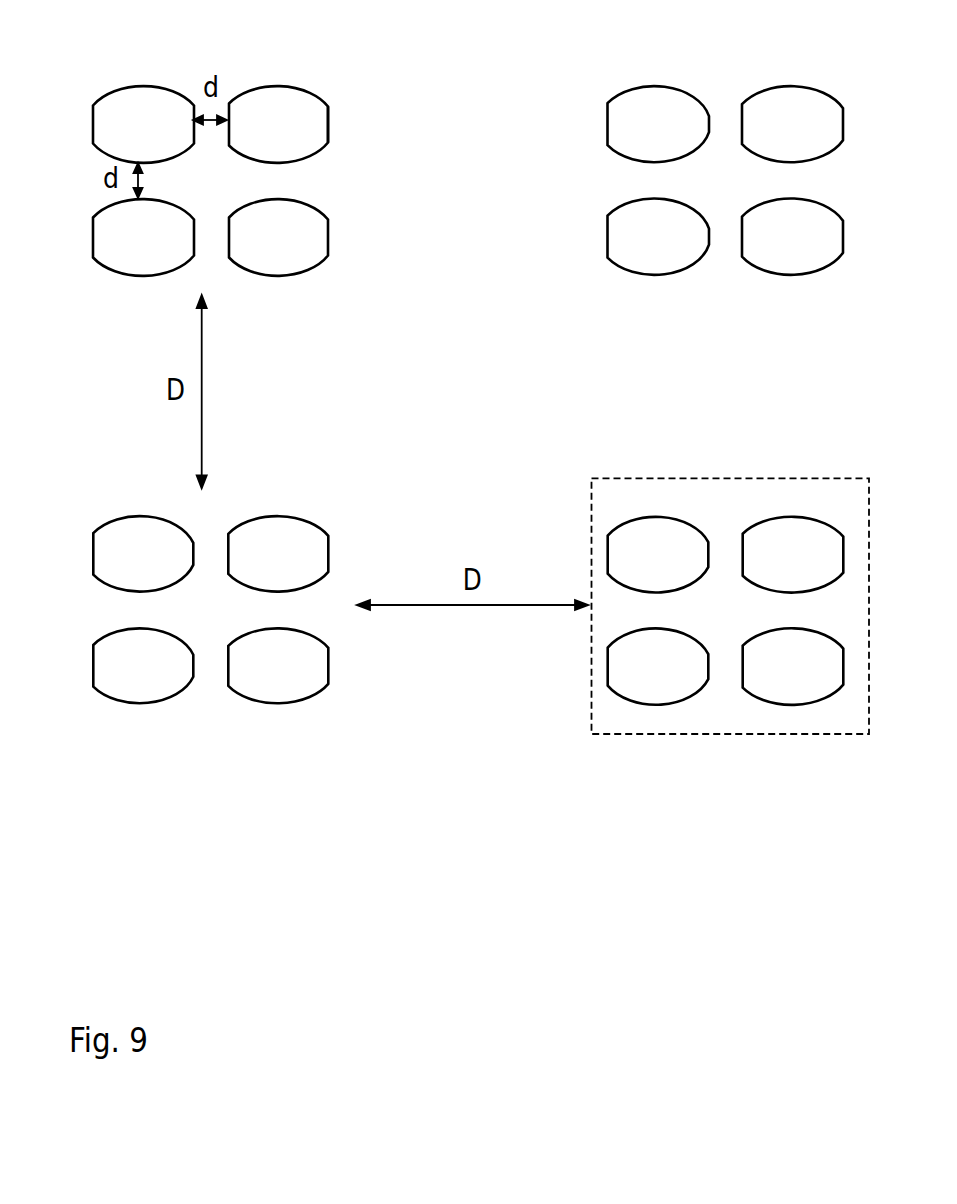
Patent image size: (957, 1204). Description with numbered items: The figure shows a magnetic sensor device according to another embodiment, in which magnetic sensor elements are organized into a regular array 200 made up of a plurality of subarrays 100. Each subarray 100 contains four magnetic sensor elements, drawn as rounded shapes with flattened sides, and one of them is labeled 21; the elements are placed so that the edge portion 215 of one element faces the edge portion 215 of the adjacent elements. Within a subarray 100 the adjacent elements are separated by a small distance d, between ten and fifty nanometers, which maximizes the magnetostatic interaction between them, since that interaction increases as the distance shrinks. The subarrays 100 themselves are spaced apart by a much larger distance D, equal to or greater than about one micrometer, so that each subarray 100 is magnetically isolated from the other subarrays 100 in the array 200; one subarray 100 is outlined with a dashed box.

The pixel 21 is at (297, 71).
The edge portion 215 is at (327, 118).
The subarray 100 is at (803, 737).
The regular array 200 is at (111, 810).